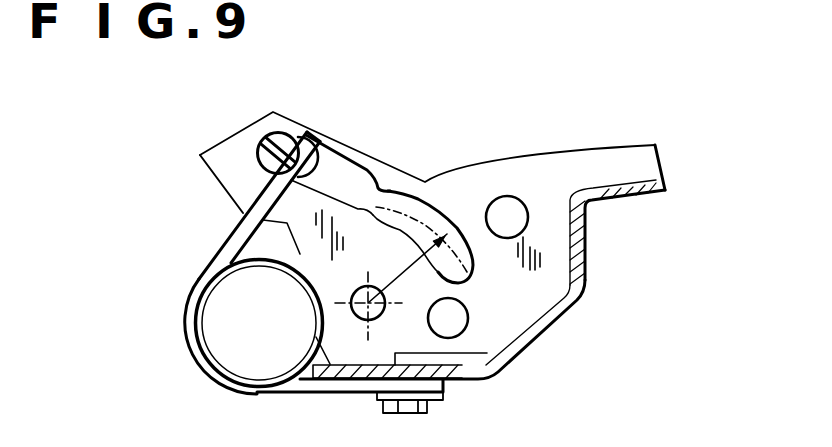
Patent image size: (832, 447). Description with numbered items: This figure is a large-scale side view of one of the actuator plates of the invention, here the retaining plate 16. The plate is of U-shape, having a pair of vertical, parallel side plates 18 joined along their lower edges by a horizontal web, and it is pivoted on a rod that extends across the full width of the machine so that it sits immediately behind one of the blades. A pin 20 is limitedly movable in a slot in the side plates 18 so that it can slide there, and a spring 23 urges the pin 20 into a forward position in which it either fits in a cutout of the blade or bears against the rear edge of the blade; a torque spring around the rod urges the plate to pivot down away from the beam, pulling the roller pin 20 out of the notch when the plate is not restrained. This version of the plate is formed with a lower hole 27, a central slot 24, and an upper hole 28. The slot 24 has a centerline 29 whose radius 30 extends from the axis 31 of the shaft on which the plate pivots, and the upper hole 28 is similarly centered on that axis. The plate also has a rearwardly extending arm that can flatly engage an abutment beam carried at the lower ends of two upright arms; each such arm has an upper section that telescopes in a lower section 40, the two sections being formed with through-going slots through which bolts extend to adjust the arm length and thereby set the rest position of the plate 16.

The retaining plate 16 is at (592, 207).
The side plates 18 is at (578, 168).
The pin 20 is at (279, 148).
The spring 23 is at (185, 335).
The central slot 24 is at (476, 264).
The lower hole 27 is at (450, 322).
The upper hole 28 is at (507, 217).
The centerline 29 is at (403, 208).
The radius 30 is at (392, 285).
The axis 31 is at (368, 303).
The lower section 40 is at (662, 157).